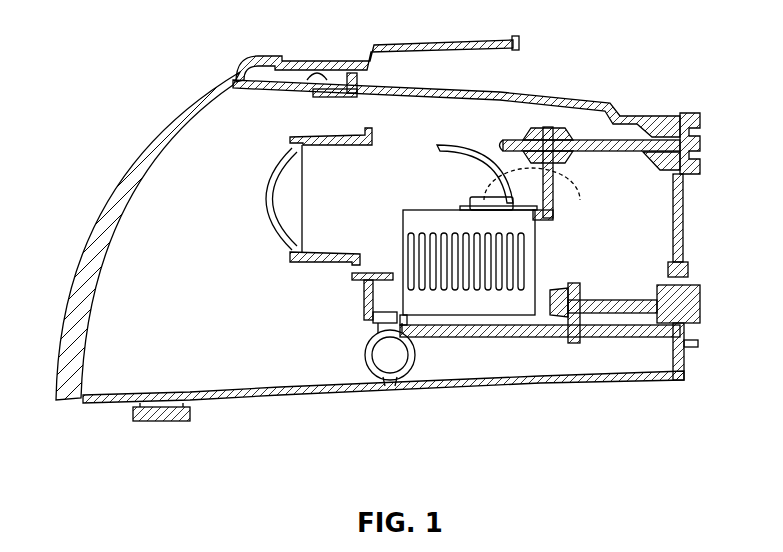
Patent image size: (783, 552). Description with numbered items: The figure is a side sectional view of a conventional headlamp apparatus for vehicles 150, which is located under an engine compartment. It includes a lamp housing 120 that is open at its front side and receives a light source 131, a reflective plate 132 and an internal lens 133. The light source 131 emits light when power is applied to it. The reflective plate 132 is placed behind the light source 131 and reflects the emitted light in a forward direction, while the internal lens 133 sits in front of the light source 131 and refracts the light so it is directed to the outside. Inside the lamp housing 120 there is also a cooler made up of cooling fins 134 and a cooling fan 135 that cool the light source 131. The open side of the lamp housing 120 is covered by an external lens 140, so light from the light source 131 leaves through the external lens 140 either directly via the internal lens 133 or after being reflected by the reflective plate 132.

The lamp housing 120 is at (686, 191).
The light source 131 is at (551, 202).
The reflective plate 132 is at (553, 186).
The internal lens 133 is at (258, 204).
The cooling fins 134 is at (533, 237).
The cooling fan 135 is at (527, 297).
The external lens 140 is at (97, 252).
The headlamp apparatus for vehicles 150 is at (684, 399).